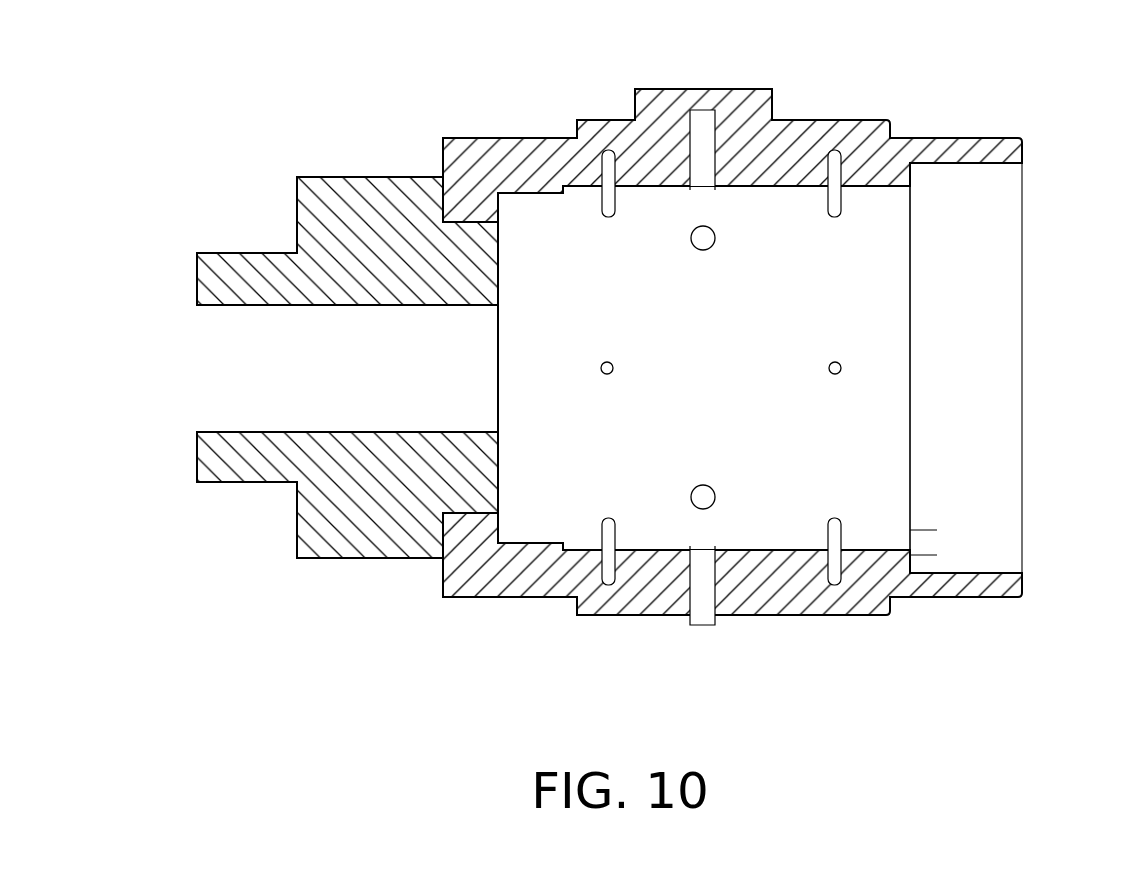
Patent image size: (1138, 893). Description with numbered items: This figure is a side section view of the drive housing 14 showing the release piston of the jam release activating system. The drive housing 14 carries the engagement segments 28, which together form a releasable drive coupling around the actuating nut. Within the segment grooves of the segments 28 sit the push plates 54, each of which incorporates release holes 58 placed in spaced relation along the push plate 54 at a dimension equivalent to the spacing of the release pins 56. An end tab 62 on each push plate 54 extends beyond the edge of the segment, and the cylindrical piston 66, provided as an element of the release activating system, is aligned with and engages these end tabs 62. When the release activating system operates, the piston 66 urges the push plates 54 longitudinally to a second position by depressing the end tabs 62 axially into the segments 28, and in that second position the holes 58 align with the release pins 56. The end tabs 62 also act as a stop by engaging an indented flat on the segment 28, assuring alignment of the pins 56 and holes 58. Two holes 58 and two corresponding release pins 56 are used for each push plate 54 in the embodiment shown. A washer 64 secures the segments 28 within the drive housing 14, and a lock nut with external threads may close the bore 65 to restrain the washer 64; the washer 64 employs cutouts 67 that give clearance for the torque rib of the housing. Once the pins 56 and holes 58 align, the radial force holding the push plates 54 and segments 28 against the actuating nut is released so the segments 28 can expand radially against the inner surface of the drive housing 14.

The drive housing 14 is at (850, 130).
The engagement segment 28 is at (828, 415).
The push plate 54 is at (760, 208).
The release pin 56 is at (608, 148).
The release hole 58 is at (604, 218).
The end tab 62 is at (512, 365).
The washer 64 is at (927, 265).
The bore 65 is at (988, 573).
The cylindrical piston 66 is at (318, 177).
The cutout 67 is at (925, 367).